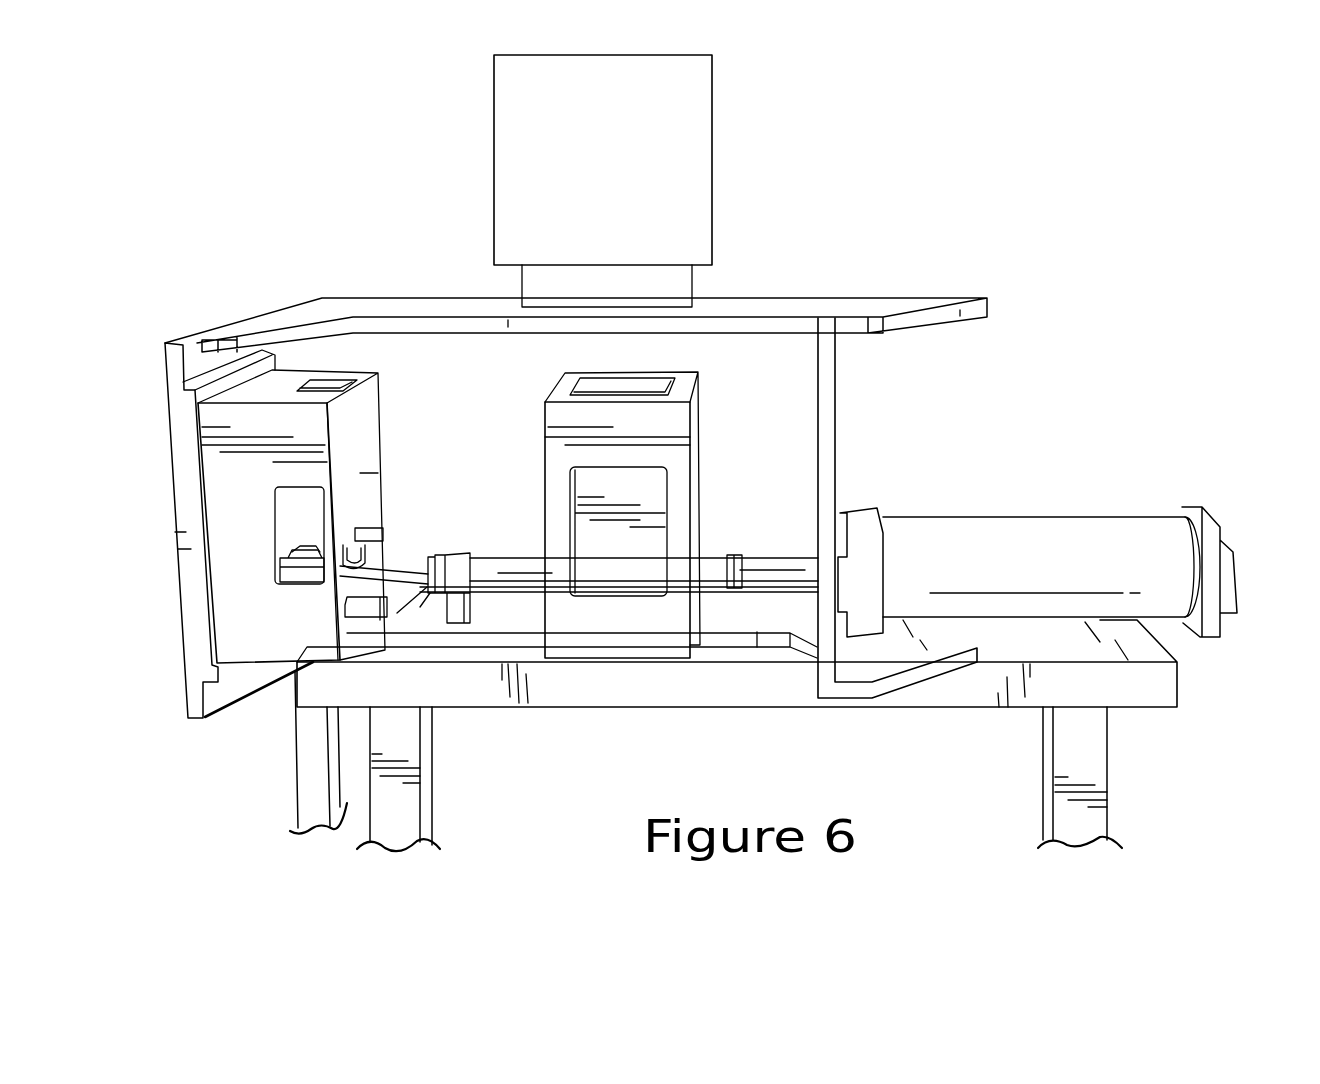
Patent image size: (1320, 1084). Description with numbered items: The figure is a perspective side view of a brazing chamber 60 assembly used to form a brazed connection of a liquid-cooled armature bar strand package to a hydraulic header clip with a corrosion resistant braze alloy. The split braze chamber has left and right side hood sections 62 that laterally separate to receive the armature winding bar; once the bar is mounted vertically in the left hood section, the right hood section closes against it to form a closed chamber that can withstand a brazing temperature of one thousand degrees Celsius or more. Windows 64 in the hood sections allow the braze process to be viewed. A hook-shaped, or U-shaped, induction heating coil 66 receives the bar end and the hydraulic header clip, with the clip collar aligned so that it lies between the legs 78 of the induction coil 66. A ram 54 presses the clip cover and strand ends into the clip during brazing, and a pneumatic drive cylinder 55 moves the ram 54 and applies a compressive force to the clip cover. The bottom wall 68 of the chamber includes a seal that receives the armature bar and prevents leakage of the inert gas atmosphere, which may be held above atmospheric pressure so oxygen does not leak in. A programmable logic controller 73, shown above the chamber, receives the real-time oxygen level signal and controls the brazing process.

The brazing chamber 60 is at (913, 167).
The programmable logic controller 73 is at (685, 235).
The hood sections 62 is at (244, 497).
The ram 54 is at (482, 567).
The windows 64 is at (614, 549).
The pneumatic drive cylinder 55 is at (1018, 574).
The induction heating coil 66 is at (300, 552).
The legs of the induction coil 78 is at (297, 568).
The bottom wall 68 is at (248, 668).